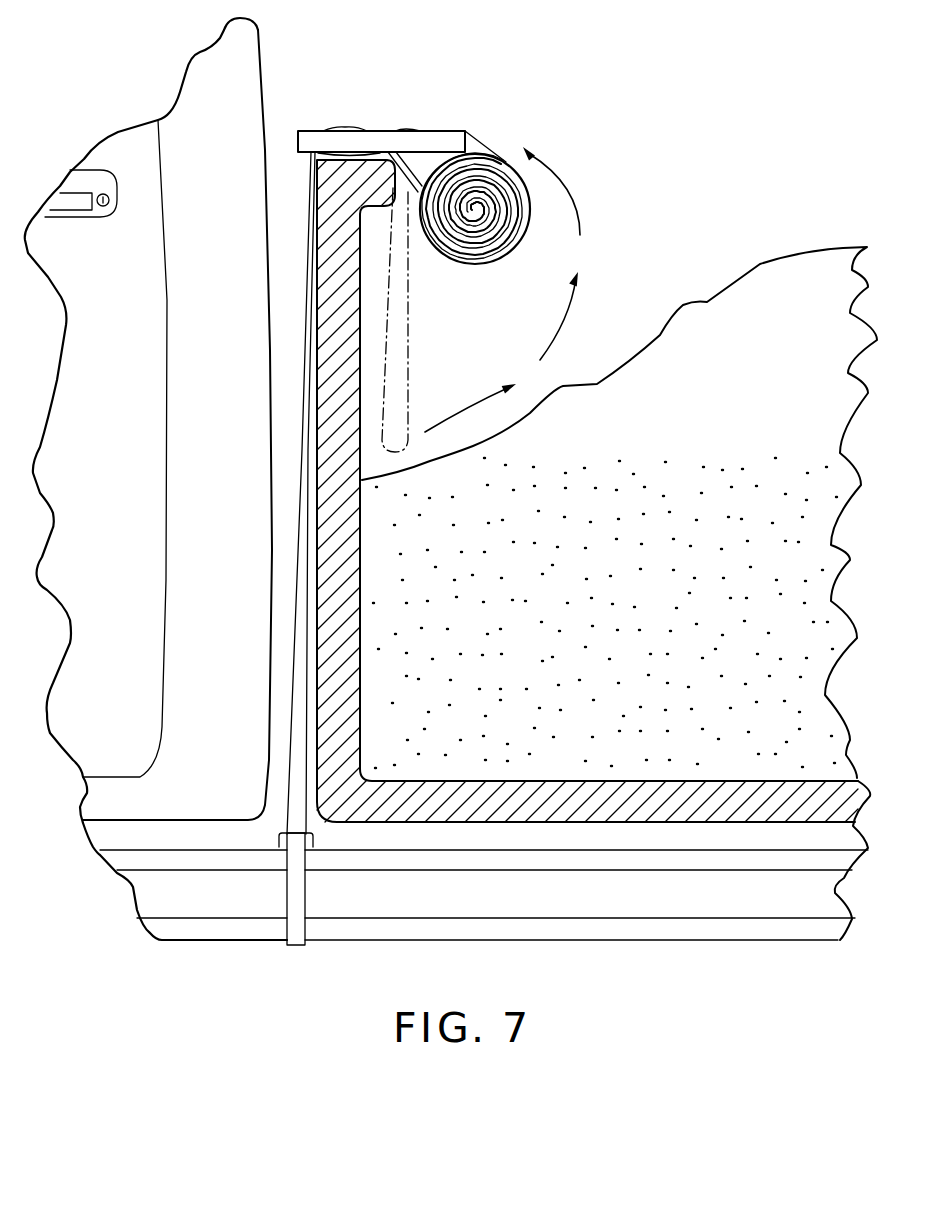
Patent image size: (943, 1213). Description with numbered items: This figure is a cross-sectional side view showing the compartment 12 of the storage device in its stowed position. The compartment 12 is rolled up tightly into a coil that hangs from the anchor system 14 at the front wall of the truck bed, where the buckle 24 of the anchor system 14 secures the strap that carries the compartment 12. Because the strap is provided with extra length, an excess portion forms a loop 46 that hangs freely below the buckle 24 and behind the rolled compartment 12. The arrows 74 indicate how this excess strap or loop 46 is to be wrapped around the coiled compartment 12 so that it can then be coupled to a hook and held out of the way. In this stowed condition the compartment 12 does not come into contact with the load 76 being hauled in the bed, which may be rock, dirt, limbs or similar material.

The compartment 12 is at (473, 269).
The anchor system 14 is at (285, 112).
The buckle 24 is at (448, 130).
The loop 46 is at (480, 140).
The arrows 74 is at (580, 197).
The load 76 is at (780, 258).